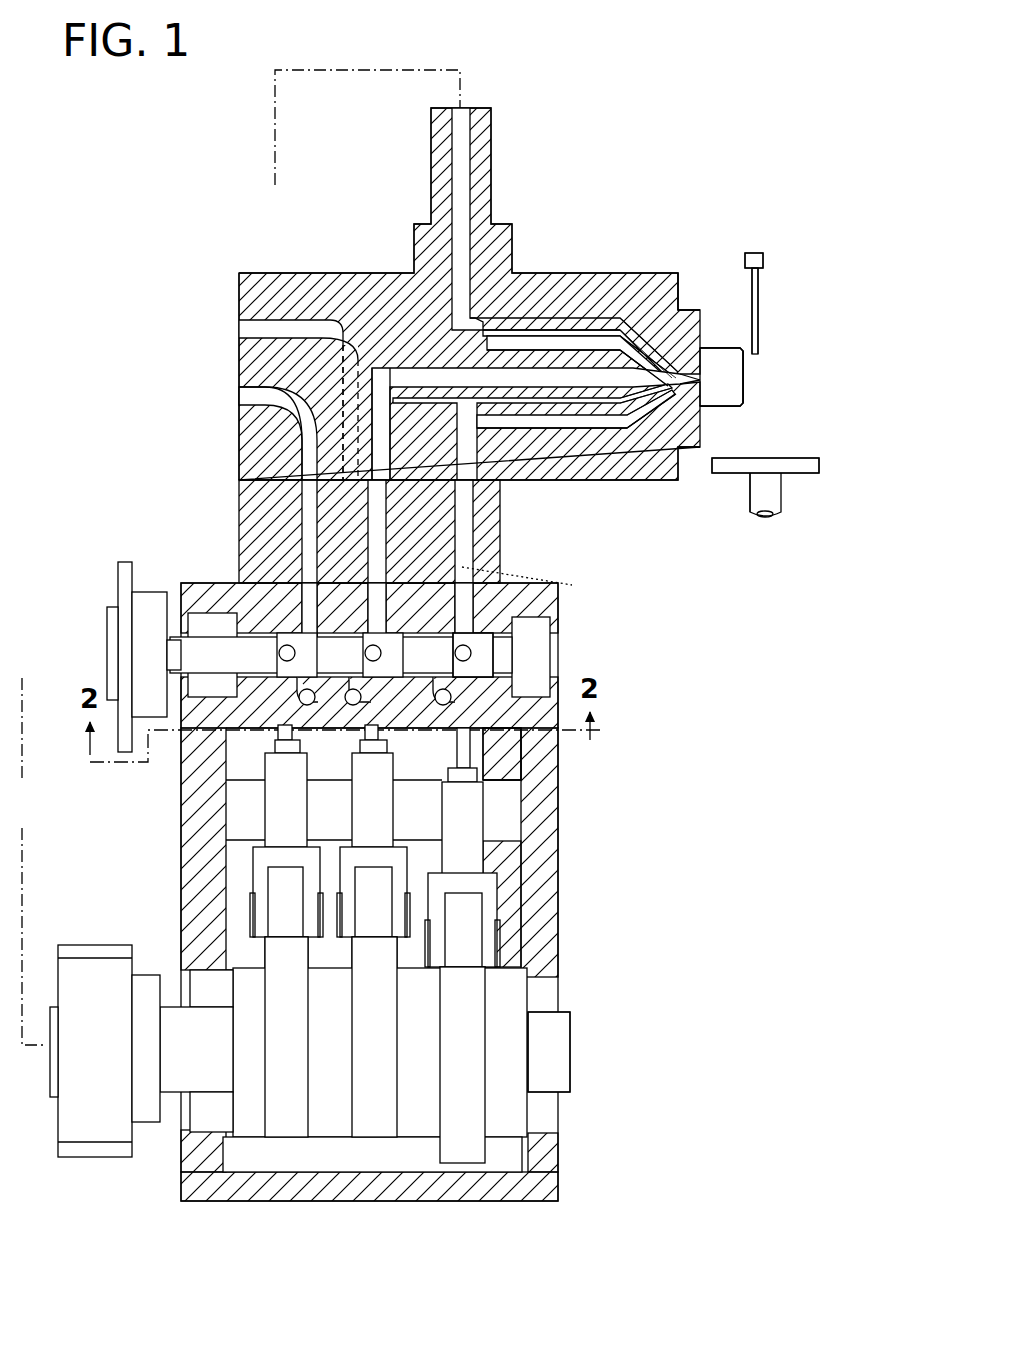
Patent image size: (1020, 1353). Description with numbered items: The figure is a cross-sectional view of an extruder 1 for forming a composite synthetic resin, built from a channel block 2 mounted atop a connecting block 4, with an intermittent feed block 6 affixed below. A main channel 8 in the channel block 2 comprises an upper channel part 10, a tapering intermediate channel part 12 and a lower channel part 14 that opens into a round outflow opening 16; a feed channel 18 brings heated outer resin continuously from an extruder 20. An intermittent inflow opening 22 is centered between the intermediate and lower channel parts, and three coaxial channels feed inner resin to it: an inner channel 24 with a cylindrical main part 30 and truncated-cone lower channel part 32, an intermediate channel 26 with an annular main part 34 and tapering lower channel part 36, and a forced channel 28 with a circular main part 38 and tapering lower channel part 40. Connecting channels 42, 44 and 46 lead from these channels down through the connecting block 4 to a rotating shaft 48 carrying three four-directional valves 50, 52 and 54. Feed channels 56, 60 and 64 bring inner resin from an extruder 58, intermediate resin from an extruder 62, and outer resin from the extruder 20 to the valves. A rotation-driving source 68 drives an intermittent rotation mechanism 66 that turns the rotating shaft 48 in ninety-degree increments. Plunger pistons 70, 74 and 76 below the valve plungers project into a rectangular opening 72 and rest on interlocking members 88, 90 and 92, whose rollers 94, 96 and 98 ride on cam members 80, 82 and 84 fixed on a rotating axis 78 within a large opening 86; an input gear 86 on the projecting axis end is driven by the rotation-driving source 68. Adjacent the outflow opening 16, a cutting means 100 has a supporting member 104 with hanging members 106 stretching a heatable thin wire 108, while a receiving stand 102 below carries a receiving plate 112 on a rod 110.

The extruder 1 is at (207, 180).
The channel block 2 is at (630, 216).
The connecting block 4 is at (508, 553).
The intermittent feed block 6 is at (580, 862).
The main channel 8 is at (572, 322).
The upper channel part 10 is at (614, 340).
The intermediate channel part 12 is at (655, 358).
The lower channel part 14 is at (715, 368).
The outflow opening 16 is at (747, 392).
The feed channel 18 is at (473, 155).
The extruder 20 is at (288, 220).
The intermittent inflow opening 22 is at (682, 372).
The inner channel 24 is at (500, 380).
The intermediate channel 26 is at (620, 340).
The forced channel 28 is at (578, 402).
The cylindrical main part 30 is at (545, 378).
The lower channel part 32 is at (607, 400).
The annular main part 34 is at (585, 330).
The tapering circular lower channel part 36 is at (645, 350).
The circular main part 38 is at (590, 420).
The tapering circular lower channel part 40 is at (620, 425).
The connecting channel 42 is at (300, 452).
The connecting channel 44 is at (352, 340).
The connecting channel 46 is at (445, 345).
The rotating shaft 48 is at (566, 653).
The four-directional valve 50 is at (266, 618).
The four-directional valve 52 is at (393, 618).
The four-directional valve 54 is at (486, 620).
The feed channel 56 is at (275, 425).
The extruder 58 is at (239, 398).
The feed channel 60 is at (258, 330).
The extruder 62 is at (239, 327).
The feed channel 64 is at (537, 584).
The intermittent rotation mechanism 66 is at (107, 653).
The rotation-driving source 68 is at (36, 817).
The plunger piston 70 is at (277, 742).
The rectangular opening 72 is at (515, 775).
The plunger piston 74 is at (400, 736).
The plunger piston 76 is at (460, 752).
The rotating axis 78 is at (566, 1075).
The cam member 80 is at (285, 952).
The cam member 82 is at (362, 948).
The cam member 84 is at (460, 1122).
The opening 86 is at (517, 930).
The interlocking member 88 is at (280, 808).
The interlocking member 90 is at (378, 810).
The interlocking member 92 is at (468, 794).
The roller 94 is at (278, 903).
The roller 96 is at (380, 875).
The roller 98 is at (467, 908).
The cutting means 100 is at (777, 276).
The receiving stand 102 is at (808, 456).
The supporting member 104 is at (757, 250).
The hanging member 106 is at (762, 308).
The heatable thin wire 108 is at (758, 355).
The rod 110 is at (778, 495).
The receiving plate 112 is at (763, 466).